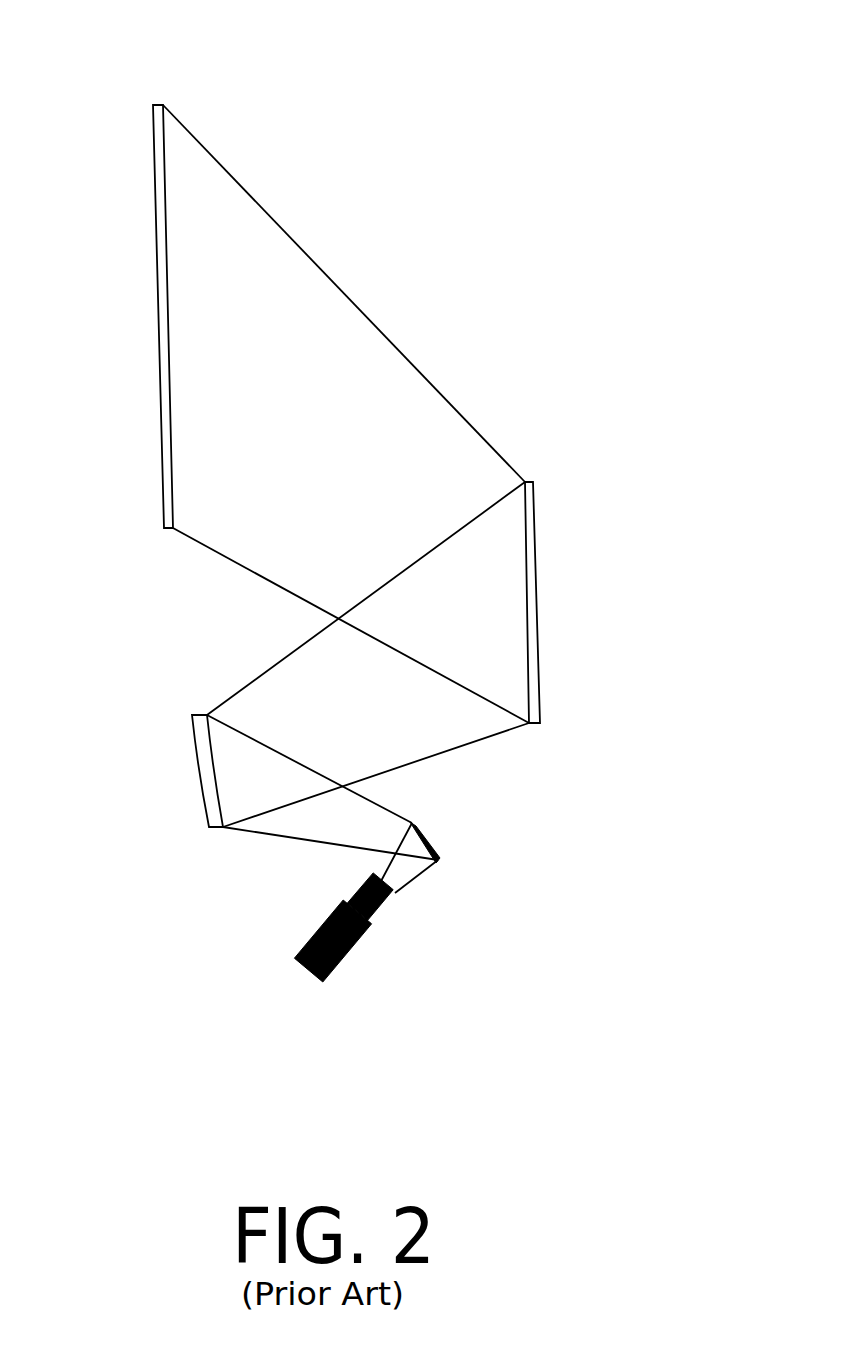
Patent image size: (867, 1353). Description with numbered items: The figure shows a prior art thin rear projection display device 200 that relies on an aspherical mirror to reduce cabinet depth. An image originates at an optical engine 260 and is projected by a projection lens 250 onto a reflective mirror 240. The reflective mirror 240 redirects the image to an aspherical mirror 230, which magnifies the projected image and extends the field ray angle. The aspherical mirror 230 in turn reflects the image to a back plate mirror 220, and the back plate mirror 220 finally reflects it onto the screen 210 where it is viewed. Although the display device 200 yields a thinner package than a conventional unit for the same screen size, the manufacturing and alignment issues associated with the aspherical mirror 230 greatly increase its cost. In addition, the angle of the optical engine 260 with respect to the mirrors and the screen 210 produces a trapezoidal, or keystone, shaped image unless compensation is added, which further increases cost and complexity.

The rear projection display device 200 is at (663, 100).
The screen 210 is at (155, 207).
The back plate mirror 220 is at (535, 484).
The aspherical mirror 230 is at (196, 780).
The reflective mirror 240 is at (435, 836).
The projection lens 250 is at (355, 887).
The optical engine 260 is at (299, 975).